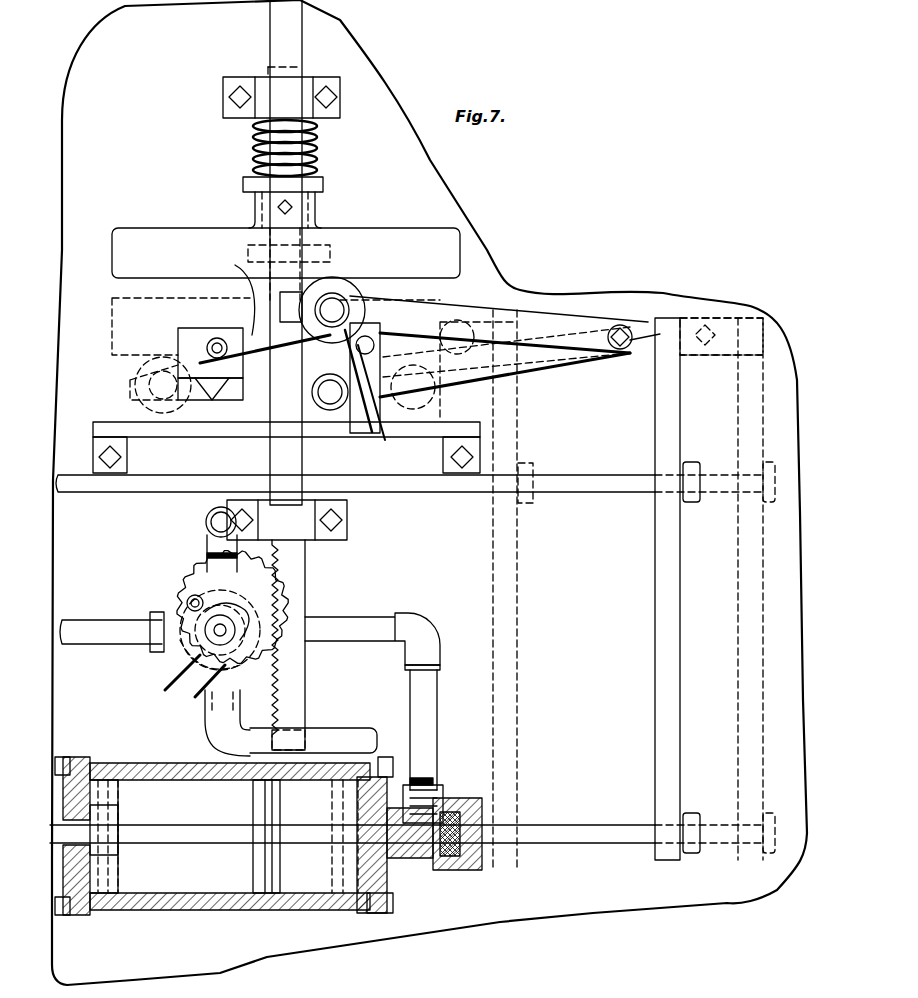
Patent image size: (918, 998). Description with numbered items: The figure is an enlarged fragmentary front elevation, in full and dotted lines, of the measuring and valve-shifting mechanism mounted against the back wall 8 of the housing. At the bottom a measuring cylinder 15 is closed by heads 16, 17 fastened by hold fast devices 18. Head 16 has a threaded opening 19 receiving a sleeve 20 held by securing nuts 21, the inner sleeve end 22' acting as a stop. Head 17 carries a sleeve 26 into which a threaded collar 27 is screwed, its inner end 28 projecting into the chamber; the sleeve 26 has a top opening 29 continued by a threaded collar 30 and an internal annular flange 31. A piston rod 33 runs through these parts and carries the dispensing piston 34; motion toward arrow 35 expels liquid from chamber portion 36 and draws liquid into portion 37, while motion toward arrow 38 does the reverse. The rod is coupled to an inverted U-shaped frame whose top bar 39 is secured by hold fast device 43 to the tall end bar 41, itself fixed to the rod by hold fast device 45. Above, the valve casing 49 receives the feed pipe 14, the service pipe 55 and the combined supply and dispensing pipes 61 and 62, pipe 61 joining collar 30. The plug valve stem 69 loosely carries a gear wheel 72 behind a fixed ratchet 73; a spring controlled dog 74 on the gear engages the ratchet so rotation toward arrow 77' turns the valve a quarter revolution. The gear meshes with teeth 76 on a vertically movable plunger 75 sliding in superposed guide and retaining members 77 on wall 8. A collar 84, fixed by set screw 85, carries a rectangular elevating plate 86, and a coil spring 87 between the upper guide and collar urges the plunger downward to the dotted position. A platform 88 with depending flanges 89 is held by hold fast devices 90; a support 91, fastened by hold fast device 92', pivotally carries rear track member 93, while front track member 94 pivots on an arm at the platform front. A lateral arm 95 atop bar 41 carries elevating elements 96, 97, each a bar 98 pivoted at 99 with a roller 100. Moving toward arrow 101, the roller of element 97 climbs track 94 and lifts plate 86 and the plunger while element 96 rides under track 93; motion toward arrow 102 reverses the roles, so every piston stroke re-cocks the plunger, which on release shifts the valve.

The back wall 8 is at (590, 900).
The feed pipe 14 is at (300, 740).
The measuring cylinder 15 is at (232, 902).
The head 16 is at (85, 762).
The head 17 is at (385, 885).
The hold fast devices 18 is at (80, 768).
The central opening 19 is at (95, 790).
The sleeve 20 is at (105, 808).
The securing nuts 21 is at (60, 775).
The sleeve end 22' is at (120, 864).
The sleeve 26 is at (423, 860).
The collar 27 is at (380, 860).
The collar end 28 is at (372, 855).
The opening 29 is at (436, 790).
The collar 30 is at (418, 785).
The annular flange 31 is at (445, 862).
The piston rod 33 is at (197, 840).
The dispensing piston 34 is at (253, 866).
The arrow 35 is at (206, 811).
The chamber portion 36 is at (128, 802).
The chamber portion 37 is at (306, 867).
The arrow 38 is at (314, 813).
The top bar 39 is at (397, 486).
The end bar 41 is at (680, 580).
The hold fast device 43 is at (690, 478).
The hold fast device 45 is at (690, 826).
The valve casing 49 is at (178, 660).
The service pipe 55 is at (207, 522).
The combined supply and dispensing pipe 61 is at (340, 628).
The combined supply and dispensing pipe 62 is at (122, 637).
The stem 69 is at (228, 628).
The gear wheel 72 is at (175, 655).
The ratchet 73 is at (210, 660).
The spring controlled dog 74 is at (195, 595).
The plunger 75 is at (280, 34).
The teeth 76 is at (300, 668).
The guide and retaining members 77 is at (291, 308).
The arrow 77' is at (150, 587).
The collar 84 is at (262, 205).
The set screw 85 is at (296, 210).
The elevating plate 86 is at (382, 240).
The coil spring 87 is at (300, 168).
The platform 88 is at (210, 430).
The depending flanges 89 is at (122, 470).
The hold-fast devices 90 is at (97, 455).
The support 91 is at (186, 340).
The hold fast device 92' is at (212, 399).
The track member 93 is at (230, 294).
The track member 94 is at (362, 432).
The arm 95 is at (630, 333).
The elevating element 96 is at (584, 374).
The elevating element 97 is at (495, 310).
The bar 98 is at (415, 308).
The pivot 99 is at (627, 352).
The roller 100 is at (348, 300).
The arrow 101 is at (570, 508).
The arrow 102 is at (482, 508).